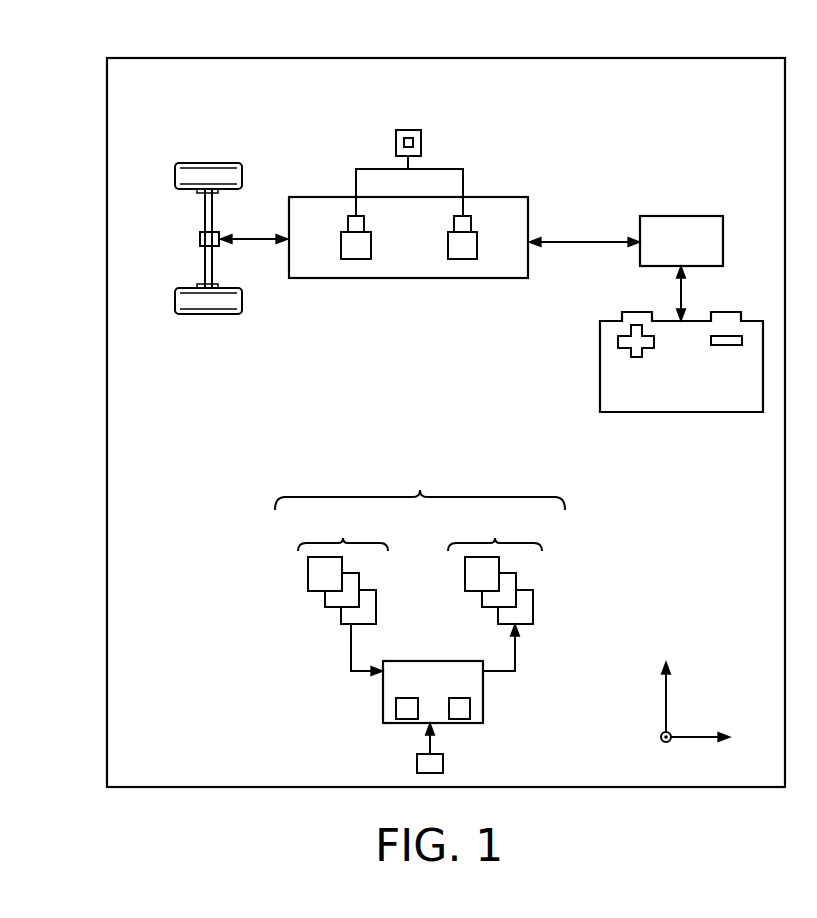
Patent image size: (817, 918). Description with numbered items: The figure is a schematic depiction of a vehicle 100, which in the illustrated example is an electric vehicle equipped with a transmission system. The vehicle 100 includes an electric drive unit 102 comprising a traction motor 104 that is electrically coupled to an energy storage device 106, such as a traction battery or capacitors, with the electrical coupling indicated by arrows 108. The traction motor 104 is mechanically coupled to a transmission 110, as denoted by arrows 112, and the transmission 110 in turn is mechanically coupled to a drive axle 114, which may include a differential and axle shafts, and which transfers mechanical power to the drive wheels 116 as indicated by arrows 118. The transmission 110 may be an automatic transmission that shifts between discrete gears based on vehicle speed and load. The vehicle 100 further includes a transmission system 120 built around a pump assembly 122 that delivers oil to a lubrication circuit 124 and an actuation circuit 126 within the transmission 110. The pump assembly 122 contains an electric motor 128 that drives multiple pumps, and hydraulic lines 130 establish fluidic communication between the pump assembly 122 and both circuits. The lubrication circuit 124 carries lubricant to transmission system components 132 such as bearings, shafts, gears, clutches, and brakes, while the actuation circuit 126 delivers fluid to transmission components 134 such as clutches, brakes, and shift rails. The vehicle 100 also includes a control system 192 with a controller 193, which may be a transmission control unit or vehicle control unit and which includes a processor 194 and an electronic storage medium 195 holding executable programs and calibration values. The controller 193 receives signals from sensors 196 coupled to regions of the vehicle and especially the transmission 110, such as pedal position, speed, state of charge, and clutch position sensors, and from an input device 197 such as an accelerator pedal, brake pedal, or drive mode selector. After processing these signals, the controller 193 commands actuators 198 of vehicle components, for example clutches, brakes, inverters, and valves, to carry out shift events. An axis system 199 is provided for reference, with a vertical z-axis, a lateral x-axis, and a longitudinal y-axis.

The vehicle 100 is at (115, 58).
The electric drive unit 102 is at (718, 146).
The traction motor 104 is at (672, 216).
The energy storage device 106 is at (690, 412).
The arrows 108 is at (686, 292).
The transmission 110 is at (310, 197).
The arrows 112 is at (582, 240).
The drive axle 114 is at (170, 238).
The drive wheels 116 is at (205, 316).
The arrows 118 is at (246, 238).
The transmission system 120 is at (440, 104).
The pump assembly 122 is at (422, 143).
The lubrication circuit 124 is at (348, 223).
The actuation circuit 126 is at (471, 223).
The electric motor 128 is at (396, 143).
The hydraulic lines 130 is at (462, 186).
The transmission system components 132 is at (360, 259).
The transmission components 134 is at (466, 259).
The control system 192 is at (420, 490).
The controller 193 is at (449, 695).
The processor 194 is at (396, 708).
The electronic storage medium 195 is at (470, 708).
The sensors 196 is at (343, 538).
The input device 197 is at (443, 763).
The actuators 198 is at (495, 538).
The axis system 199 is at (698, 706).